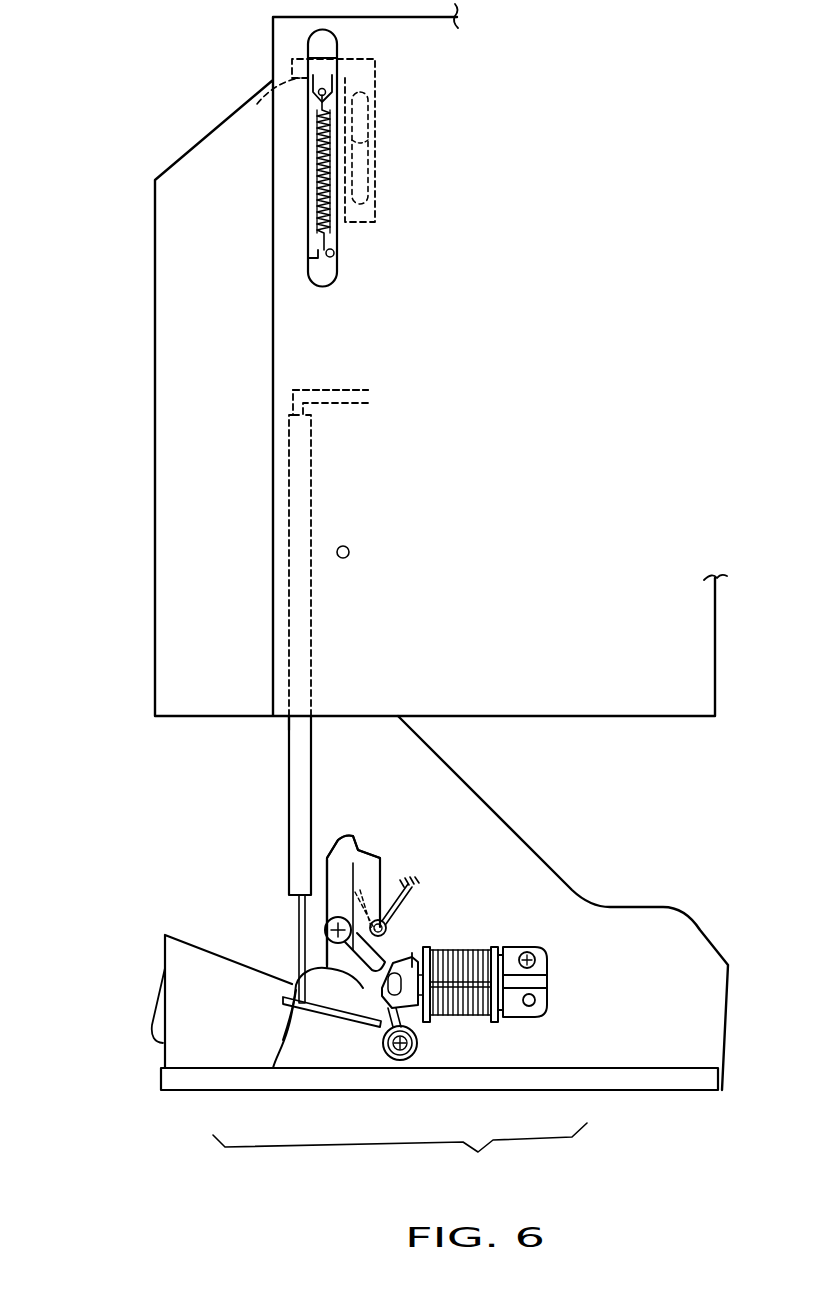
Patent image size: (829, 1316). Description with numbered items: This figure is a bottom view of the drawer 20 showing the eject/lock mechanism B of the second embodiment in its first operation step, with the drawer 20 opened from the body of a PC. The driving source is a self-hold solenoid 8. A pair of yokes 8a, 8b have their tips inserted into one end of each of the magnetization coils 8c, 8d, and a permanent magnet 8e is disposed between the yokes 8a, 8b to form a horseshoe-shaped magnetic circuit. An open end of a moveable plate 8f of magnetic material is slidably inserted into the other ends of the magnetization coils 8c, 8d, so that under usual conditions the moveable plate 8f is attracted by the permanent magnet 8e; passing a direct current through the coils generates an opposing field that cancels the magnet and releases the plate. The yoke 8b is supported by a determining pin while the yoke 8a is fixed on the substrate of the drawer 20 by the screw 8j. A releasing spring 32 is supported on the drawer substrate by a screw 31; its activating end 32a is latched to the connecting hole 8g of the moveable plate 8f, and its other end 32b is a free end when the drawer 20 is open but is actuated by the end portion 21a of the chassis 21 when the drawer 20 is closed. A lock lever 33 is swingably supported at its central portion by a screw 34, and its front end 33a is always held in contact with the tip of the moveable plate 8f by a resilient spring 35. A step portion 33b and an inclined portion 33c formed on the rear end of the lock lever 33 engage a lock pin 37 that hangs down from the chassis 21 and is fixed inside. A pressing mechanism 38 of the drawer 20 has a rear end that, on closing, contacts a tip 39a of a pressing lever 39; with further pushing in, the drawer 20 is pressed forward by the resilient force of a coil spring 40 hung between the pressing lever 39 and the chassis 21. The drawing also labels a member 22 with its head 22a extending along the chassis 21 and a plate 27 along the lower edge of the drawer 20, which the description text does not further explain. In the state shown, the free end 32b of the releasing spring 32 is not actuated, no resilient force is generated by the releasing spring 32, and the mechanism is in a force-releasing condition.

The self-hold solenoid 8 is at (522, 928).
The yoke 8a is at (548, 960).
The yoke 8b is at (543, 1017).
The magnetization coil 8c is at (472, 1016).
The magnetization coil 8d is at (470, 950).
The permanent magnet 8e is at (548, 985).
The moveable plate 8f is at (412, 967).
The connecting hole 8g is at (412, 1010).
The screw 8j is at (537, 948).
The drawer 20 is at (516, 815).
The chassis 21 is at (358, 639).
The end portion 21a is at (277, 720).
The slide rod 22 is at (297, 797).
The rod head 22a is at (302, 392).
The base plate 27 is at (585, 1078).
The screw 31 is at (395, 1061).
The releasing spring 32 is at (373, 1047).
The activating end 32a is at (360, 1015).
The free end 32b is at (280, 1050).
The lock lever 33 is at (389, 858).
The front end 33a is at (283, 983).
The step portion 33b is at (333, 872).
The inclined portion 33c is at (322, 860).
The screw 34 is at (325, 930).
The resilient spring 35 is at (422, 887).
The lock pin 37 is at (348, 548).
The pressing mechanism 38 is at (356, 230).
The pressing lever 39 is at (378, 88).
The tip 39a is at (257, 104).
The coil spring 40 is at (317, 172).
The eject/lock mechanism B is at (488, 1181).